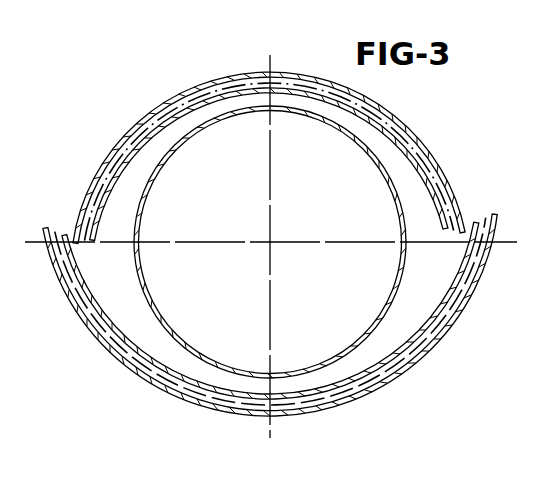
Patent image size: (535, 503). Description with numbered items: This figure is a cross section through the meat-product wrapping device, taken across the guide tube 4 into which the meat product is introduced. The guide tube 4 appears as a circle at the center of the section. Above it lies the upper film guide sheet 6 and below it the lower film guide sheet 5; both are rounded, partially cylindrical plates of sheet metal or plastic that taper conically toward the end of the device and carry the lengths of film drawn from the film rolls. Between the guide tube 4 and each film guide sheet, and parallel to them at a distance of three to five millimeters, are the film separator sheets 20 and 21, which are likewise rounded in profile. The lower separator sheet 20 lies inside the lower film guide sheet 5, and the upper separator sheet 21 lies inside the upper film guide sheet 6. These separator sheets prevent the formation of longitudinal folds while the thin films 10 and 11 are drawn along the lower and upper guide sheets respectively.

The guide tube 4 is at (249, 106).
The upper film guide sheet 6 is at (188, 90).
The film 11 is at (145, 125).
The film separator sheet 21 is at (122, 158).
The lower film guide sheet 5 is at (153, 388).
The film 10 is at (117, 357).
The film separator sheet 20 is at (80, 305).